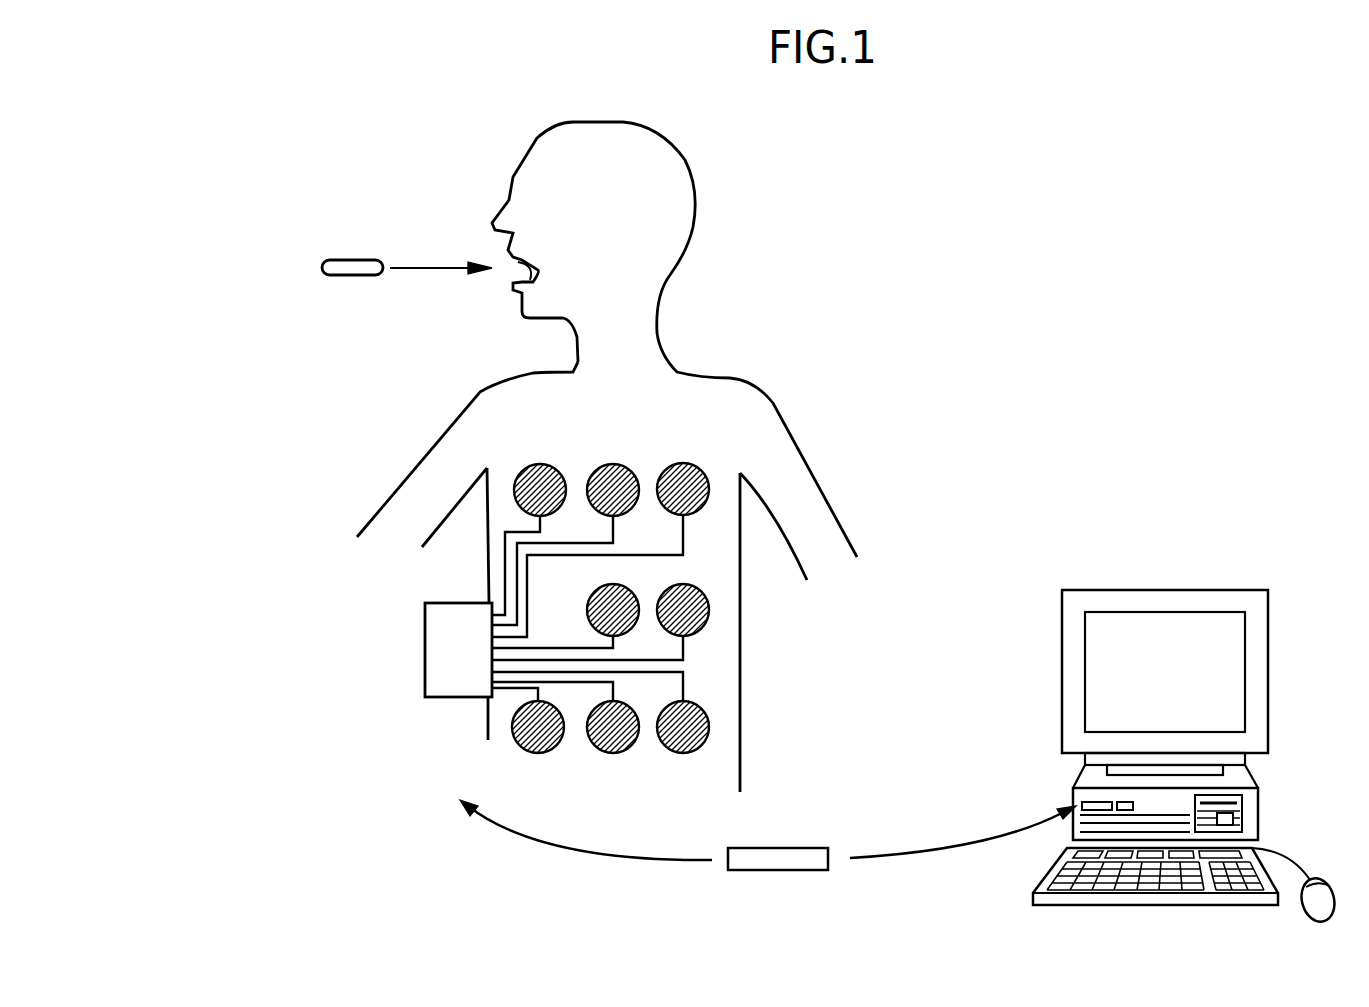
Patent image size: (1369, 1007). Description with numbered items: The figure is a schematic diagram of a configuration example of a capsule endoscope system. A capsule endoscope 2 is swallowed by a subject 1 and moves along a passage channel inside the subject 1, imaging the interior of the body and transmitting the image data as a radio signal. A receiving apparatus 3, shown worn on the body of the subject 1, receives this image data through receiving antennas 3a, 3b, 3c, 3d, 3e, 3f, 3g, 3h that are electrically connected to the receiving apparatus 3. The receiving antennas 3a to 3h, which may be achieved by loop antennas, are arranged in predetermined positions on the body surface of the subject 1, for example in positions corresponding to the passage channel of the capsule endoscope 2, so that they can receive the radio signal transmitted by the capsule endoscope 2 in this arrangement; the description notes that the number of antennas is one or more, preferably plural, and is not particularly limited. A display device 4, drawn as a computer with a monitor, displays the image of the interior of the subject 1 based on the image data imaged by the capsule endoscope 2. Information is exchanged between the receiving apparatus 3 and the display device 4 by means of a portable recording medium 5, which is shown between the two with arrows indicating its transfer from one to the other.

The subject 1 is at (675, 110).
The capsule endoscope 2 is at (351, 259).
The receiving apparatus 3 is at (425, 627).
The receiving antenna 3a is at (536, 465).
The receiving antenna 3b is at (613, 465).
The receiving antenna 3c is at (684, 464).
The receiving antenna 3d is at (588, 607).
The receiving antenna 3e is at (696, 587).
The receiving antenna 3f is at (538, 754).
The receiving antenna 3g is at (613, 754).
The receiving antenna 3h is at (684, 754).
The display device 4 is at (1159, 569).
The portable recording medium 5 is at (777, 861).